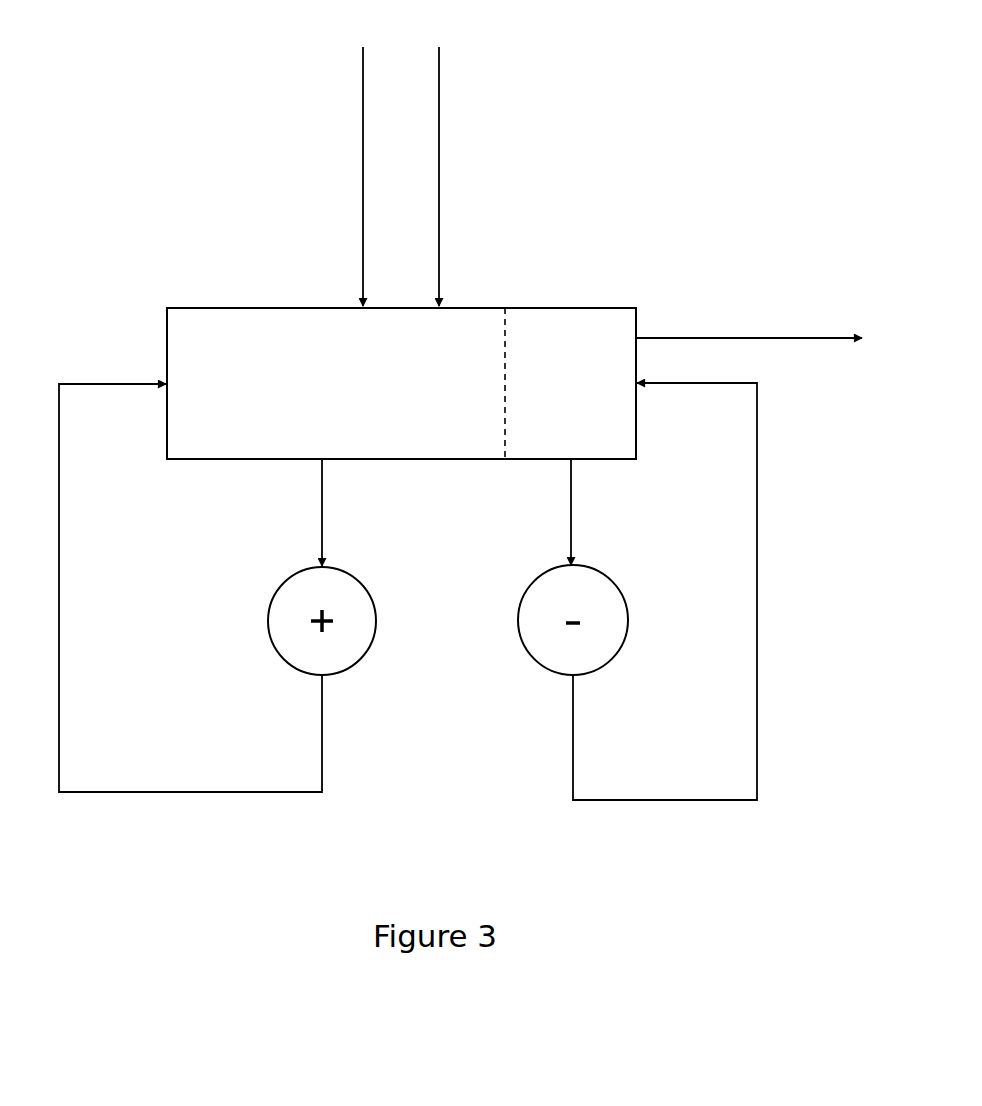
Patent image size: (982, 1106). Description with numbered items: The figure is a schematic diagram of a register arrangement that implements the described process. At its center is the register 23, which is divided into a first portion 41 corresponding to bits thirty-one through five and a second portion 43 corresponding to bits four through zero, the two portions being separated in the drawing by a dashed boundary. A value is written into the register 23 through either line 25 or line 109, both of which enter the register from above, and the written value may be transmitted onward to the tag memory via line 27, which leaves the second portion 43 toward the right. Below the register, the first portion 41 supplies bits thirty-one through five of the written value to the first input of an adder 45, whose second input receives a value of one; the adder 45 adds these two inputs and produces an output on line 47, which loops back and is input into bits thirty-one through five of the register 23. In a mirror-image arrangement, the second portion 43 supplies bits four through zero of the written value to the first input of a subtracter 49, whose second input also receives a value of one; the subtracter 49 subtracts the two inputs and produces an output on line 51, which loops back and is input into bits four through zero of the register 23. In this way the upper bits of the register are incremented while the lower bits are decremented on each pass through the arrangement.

The line 109 is at (362, 124).
The line 25 is at (440, 124).
The first portion 41 is at (242, 306).
The second portion 43 is at (581, 306).
The line 27 is at (722, 337).
The register 23 is at (438, 462).
The adder 45 is at (277, 585).
The subtracter 49 is at (618, 585).
The line 47 is at (236, 793).
The line 51 is at (639, 802).